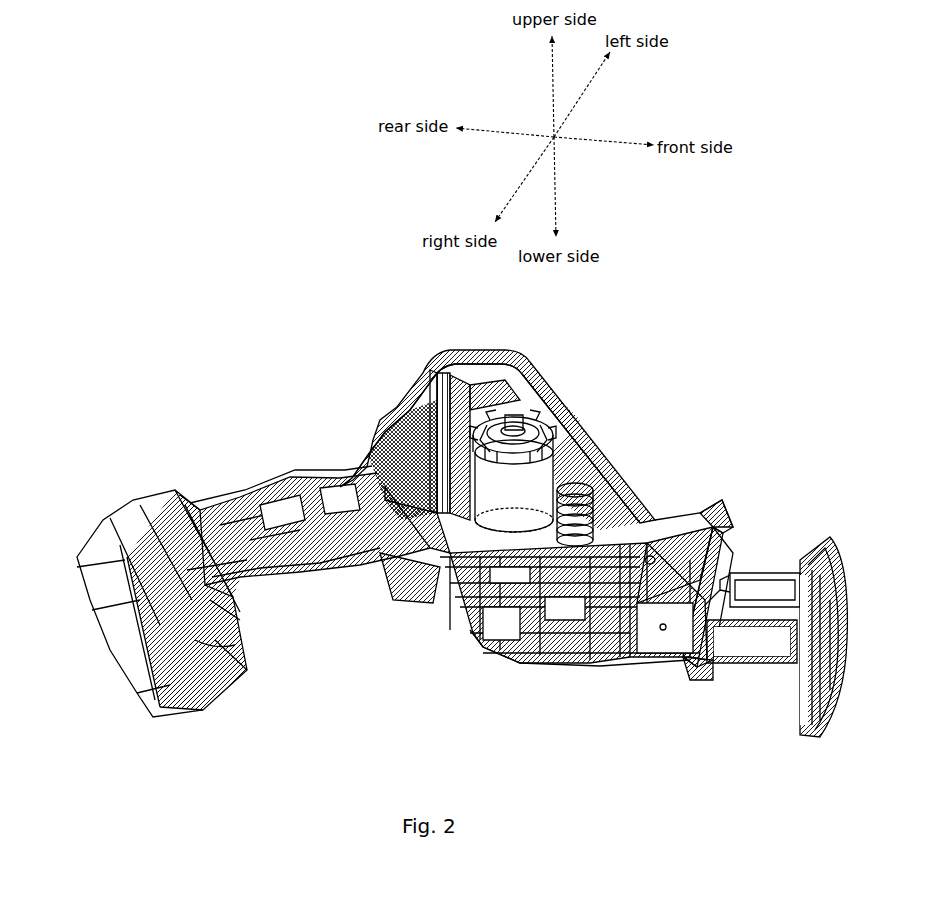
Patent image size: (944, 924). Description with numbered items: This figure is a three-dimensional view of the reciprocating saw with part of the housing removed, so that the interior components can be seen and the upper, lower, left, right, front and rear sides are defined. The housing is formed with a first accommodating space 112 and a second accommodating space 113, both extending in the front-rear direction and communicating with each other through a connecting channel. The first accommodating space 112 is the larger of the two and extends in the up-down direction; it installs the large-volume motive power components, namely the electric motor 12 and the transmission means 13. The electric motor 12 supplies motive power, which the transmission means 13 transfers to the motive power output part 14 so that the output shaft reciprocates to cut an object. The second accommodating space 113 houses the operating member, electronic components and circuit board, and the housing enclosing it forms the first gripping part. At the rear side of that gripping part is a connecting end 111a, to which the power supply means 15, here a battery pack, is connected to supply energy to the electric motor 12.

The first accommodating space 112 is at (557, 397).
The electric motor 12 is at (588, 453).
The transmission means 13 is at (640, 517).
The motive power output part 14 is at (510, 653).
The power supply means 15 is at (130, 690).
The second accommodating space 113 is at (247, 473).
The connecting end 111a is at (240, 590).